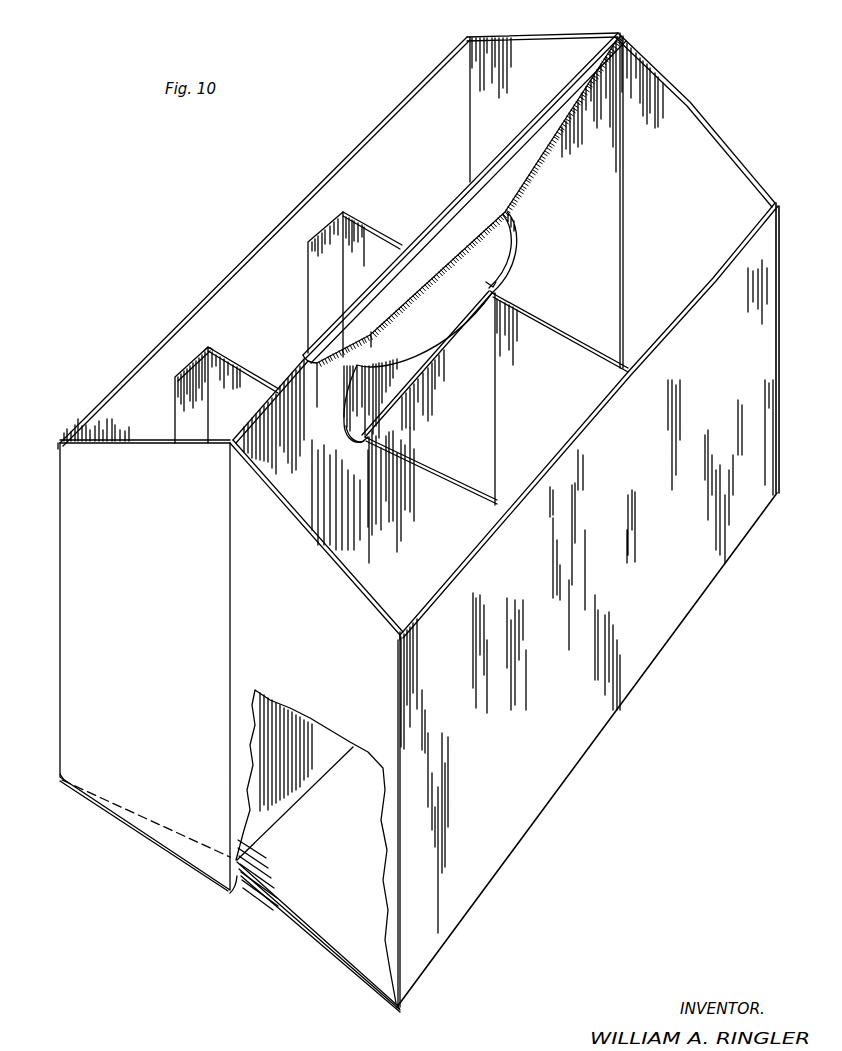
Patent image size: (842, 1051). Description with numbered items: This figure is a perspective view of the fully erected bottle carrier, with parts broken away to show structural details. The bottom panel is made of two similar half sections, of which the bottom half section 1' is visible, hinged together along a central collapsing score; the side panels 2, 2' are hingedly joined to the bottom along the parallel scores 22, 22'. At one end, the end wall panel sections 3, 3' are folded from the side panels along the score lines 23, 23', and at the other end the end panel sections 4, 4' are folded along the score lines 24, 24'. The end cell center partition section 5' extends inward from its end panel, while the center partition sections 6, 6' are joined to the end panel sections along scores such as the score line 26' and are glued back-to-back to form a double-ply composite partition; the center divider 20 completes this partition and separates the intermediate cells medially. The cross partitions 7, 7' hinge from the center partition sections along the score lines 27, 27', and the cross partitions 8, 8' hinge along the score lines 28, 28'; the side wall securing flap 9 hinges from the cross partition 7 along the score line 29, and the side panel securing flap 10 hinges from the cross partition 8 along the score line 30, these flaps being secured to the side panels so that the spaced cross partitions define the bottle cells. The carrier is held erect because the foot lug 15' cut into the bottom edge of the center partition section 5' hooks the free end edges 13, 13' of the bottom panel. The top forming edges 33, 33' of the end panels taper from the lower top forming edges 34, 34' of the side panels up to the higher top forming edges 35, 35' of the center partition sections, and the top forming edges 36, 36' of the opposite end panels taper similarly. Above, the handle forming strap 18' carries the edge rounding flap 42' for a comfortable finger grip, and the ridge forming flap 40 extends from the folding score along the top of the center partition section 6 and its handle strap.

The bottom half section 1' is at (319, 926).
The side panel 2 is at (263, 240).
The side panel 2' is at (588, 605).
The end wall panel section 3 is at (145, 667).
The end wall panel section 3' is at (315, 725).
The end panel section 4 is at (510, 49).
The end panel section 4' is at (688, 99).
The end cell center partition section 5' is at (323, 680).
The end cell center partition section 6 is at (524, 252).
The end cell center partition section 6' is at (589, 149).
The cross partition 7 is at (243, 369).
The cross partition 7' is at (431, 470).
The cross partition 8 is at (417, 322).
The cross partition 8' is at (560, 332).
The side wall securing flap 9 is at (184, 404).
The side panel securing flap 10 is at (323, 297).
The end edge 13 is at (146, 825).
The end edge 13' is at (318, 935).
The foot lug 15' is at (218, 902).
The handle forming strap 18' is at (300, 382).
The center divider 20 is at (460, 403).
The score 22 is at (60, 807).
The score 22' is at (411, 1023).
The score line 23 is at (49, 429).
The score line 23' is at (399, 610).
The score line 24 is at (451, 109).
The score line 24' is at (587, 419).
The score line 26' is at (639, 200).
The score line 27 is at (335, 443).
The score line 27' is at (394, 500).
The score line 28 is at (481, 274).
The score line 28' is at (522, 296).
The score line 29 is at (203, 373).
The score line 30 is at (351, 221).
The top forming edge 33 is at (145, 431).
The top forming edge 33' is at (318, 536).
The top forming edge 34 is at (266, 243).
The top forming edge 34' is at (590, 422).
The top forming edge 35 is at (229, 413).
The top forming edge 35' is at (293, 417).
The top forming edge 36 is at (542, 20).
The top forming edge 36' is at (695, 120).
The ridge forming flap 40 is at (465, 237).
The edge rounding flap 42' is at (469, 237).